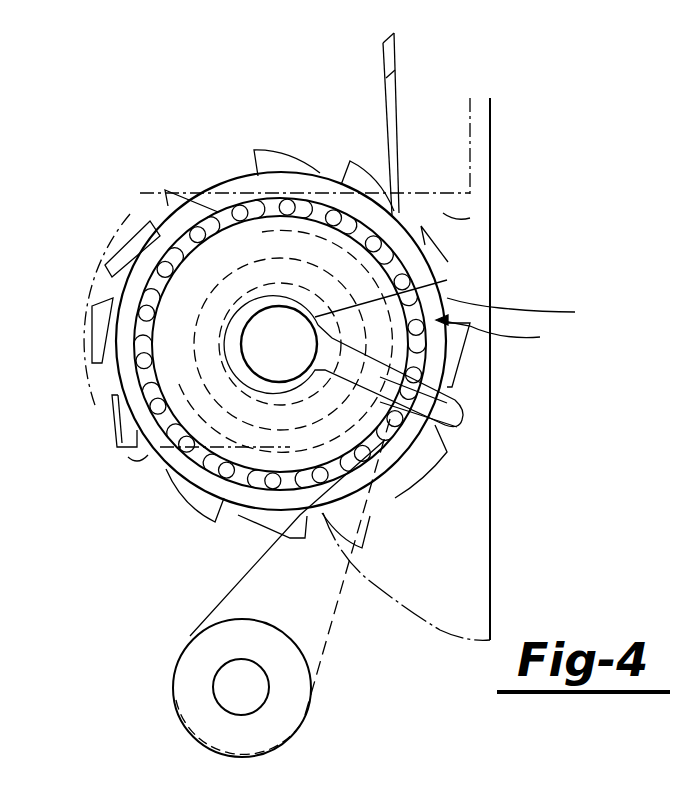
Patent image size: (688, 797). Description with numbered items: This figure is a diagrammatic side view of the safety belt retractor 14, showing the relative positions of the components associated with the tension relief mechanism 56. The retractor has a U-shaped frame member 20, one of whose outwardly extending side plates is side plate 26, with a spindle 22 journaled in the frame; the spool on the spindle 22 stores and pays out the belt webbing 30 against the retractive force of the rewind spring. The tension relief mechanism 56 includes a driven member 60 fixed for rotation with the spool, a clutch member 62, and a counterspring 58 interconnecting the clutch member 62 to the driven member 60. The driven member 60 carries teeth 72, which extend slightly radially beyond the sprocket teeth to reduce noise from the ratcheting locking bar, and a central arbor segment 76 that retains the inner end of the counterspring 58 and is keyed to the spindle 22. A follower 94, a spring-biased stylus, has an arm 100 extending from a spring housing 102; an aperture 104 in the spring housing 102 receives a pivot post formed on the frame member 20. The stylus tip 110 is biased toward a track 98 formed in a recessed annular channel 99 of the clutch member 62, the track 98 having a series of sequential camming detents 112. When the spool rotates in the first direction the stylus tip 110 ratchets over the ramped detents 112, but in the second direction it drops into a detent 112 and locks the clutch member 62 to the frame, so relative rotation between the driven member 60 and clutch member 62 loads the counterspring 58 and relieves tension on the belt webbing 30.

The safety belt retractor 14 is at (150, 458).
The U-shaped frame member 20 is at (490, 168).
The spindle 22 is at (297, 357).
The side plate 26 is at (482, 216).
The belt webbing 30 is at (398, 55).
The tension relief mechanism 56 is at (468, 386).
The counterspring 58 is at (190, 365).
The driven member 60 is at (186, 174).
The clutch member 62 is at (505, 333).
The teeth 72 is at (270, 163).
The central arbor segment 76 is at (445, 283).
The follower 94 is at (282, 586).
The track 98 is at (529, 309).
The recessed annular channel 99 is at (215, 200).
The arm 100 is at (395, 480).
The spring housing 102 is at (285, 712).
The aperture 104 is at (226, 672).
The stylus tip 110 is at (410, 422).
The camming detents 112 is at (185, 262).